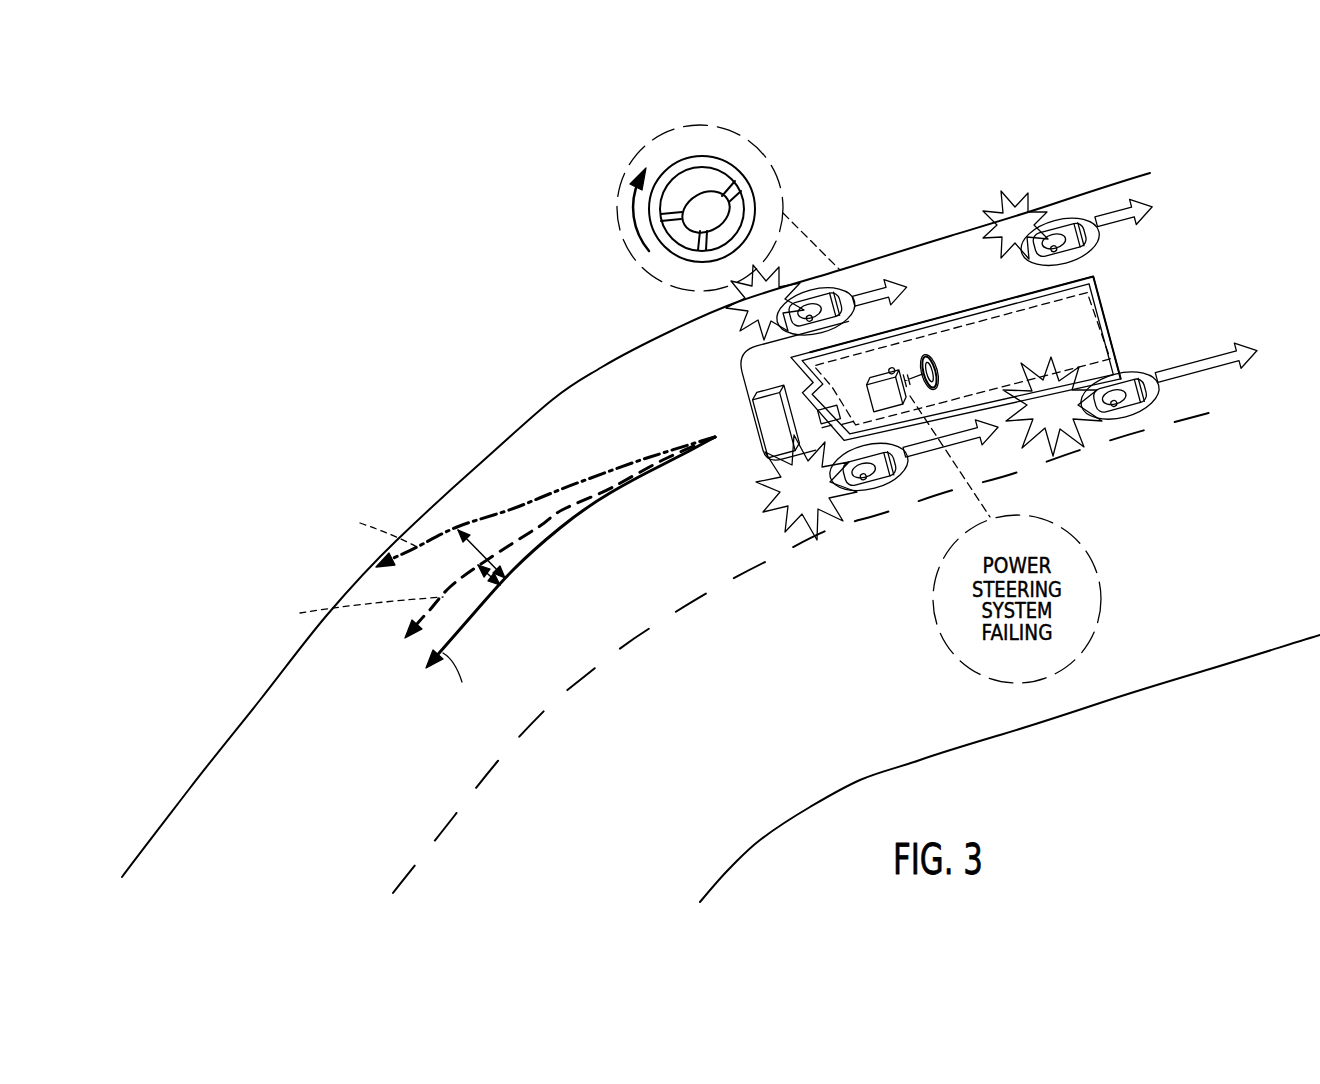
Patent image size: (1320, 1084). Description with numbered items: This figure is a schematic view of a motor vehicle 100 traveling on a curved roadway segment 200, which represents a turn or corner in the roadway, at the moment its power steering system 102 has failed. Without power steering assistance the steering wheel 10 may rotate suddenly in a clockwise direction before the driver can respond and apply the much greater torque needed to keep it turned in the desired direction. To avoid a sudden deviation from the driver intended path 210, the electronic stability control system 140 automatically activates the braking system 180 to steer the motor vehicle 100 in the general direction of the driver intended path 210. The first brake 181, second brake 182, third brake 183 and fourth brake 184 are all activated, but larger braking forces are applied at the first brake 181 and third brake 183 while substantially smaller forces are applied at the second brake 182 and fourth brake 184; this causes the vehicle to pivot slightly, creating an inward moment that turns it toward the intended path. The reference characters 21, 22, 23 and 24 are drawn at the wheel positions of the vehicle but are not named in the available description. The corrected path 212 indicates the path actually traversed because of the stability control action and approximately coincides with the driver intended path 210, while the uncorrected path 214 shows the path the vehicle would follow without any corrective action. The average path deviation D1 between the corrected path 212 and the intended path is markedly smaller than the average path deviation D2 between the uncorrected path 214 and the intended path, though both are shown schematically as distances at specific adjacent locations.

The steering wheel 10 is at (744, 174).
The front right wheel 21 is at (888, 478).
The front left wheel 22 is at (808, 292).
The rear right wheel 23 is at (1128, 380).
The rear left wheel 24 is at (1066, 230).
The motor vehicle 100 is at (1018, 444).
The power steering system 102 is at (935, 399).
The electronic stability control system 140 is at (792, 486).
The braking system 180 is at (882, 318).
The first brake 181 is at (882, 482).
The second brake 182 is at (842, 288).
The third brake 183 is at (1143, 406).
The fourth brake 184 is at (1105, 245).
The curved roadway segment 200 is at (600, 358).
The driver intended path 210 is at (612, 500).
The corrected path 212 is at (540, 535).
The uncorrected path 214 is at (513, 507).
The average path deviation D1 is at (486, 582).
The average path deviation D2 is at (478, 550).